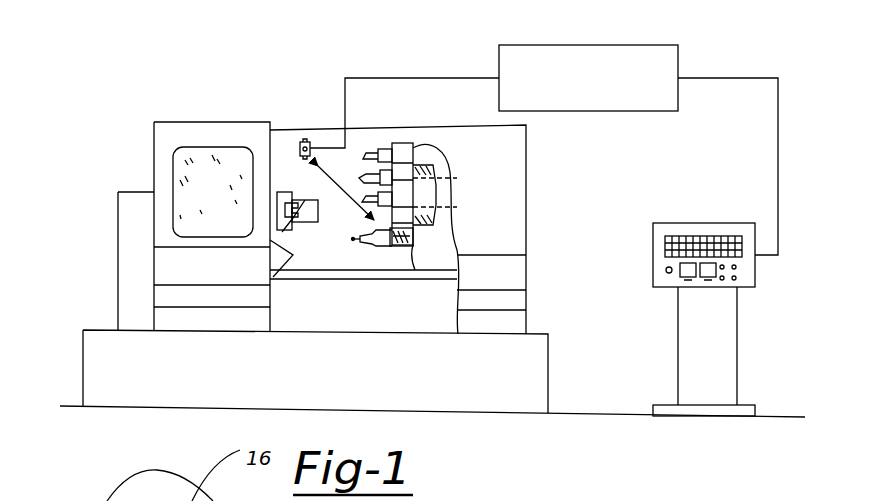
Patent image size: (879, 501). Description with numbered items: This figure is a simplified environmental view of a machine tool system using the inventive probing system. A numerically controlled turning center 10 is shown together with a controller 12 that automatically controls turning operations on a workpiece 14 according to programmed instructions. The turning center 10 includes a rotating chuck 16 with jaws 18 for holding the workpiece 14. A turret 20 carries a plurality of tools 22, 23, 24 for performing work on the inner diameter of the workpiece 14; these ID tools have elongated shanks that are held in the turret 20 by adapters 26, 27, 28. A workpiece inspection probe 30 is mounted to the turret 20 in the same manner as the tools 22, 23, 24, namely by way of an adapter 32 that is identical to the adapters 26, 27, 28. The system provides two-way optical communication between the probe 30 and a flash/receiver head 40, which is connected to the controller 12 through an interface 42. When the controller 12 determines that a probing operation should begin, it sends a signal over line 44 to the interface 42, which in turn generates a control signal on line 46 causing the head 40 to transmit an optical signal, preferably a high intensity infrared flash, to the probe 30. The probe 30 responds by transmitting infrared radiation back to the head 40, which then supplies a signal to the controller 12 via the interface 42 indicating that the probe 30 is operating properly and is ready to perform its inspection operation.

The turning center 10 is at (188, 88).
The controller 12 is at (675, 227).
The workpiece 14 is at (305, 200).
The rotating chuck 16 is at (282, 222).
The jaws 18 is at (282, 226).
The turret 20 is at (383, 256).
The tool 22 is at (384, 149).
The tool 23 is at (363, 168).
The tool 24 is at (424, 214).
The adapter 26 is at (397, 143).
The adapter 27 is at (414, 168).
The adapter 28 is at (405, 196).
The workpiece inspection probe 30 is at (372, 250).
The adapter 32 is at (398, 247).
The flash/receiver head 40 is at (301, 142).
The interface 42 is at (573, 45).
The line 44 is at (715, 78).
The line 46 is at (443, 78).